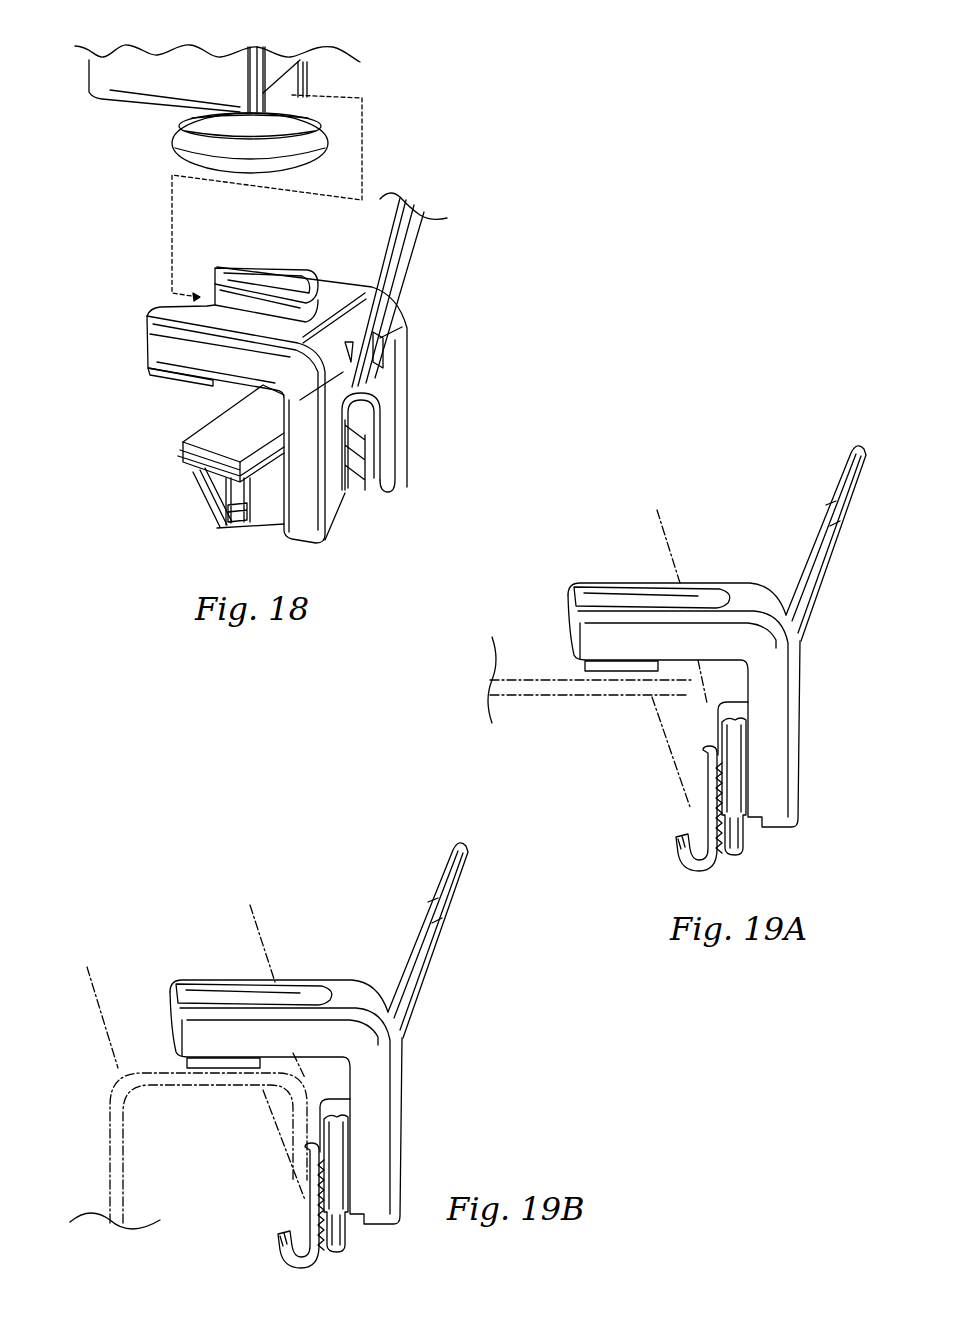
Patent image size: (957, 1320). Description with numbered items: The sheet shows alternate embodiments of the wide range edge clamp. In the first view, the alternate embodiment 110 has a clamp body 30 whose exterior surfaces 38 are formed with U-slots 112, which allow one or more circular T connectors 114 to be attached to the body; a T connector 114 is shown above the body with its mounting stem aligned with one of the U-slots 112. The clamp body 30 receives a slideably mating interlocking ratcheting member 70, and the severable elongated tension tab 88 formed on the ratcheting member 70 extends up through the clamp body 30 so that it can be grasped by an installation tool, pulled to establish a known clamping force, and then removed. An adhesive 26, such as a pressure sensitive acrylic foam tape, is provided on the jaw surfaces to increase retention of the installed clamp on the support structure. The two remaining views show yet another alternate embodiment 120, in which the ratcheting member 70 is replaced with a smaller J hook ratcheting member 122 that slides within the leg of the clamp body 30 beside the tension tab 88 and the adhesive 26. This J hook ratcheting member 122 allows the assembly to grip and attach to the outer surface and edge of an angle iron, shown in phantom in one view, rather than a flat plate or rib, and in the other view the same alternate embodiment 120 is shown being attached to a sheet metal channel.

In FIG. 18, the alternate embodiment 110 is at (118, 300).
In FIG. 18, the circular T connector 114 is at (177, 150).
In FIG. 18, the U-slot 112 is at (229, 283).
In FIG. 18, the exterior surface 38 is at (300, 277).
In FIG. 18, the tension tab 88 is at (408, 252).
In FIG. 19A, the tension tab 88 is at (835, 543).
In FIG. 19B, the tension tab 88 is at (427, 958).
In FIG. 18, the clamp body 30 is at (160, 342).
In FIG. 18, the adhesive 26 is at (170, 380).
In FIG. 19A, the adhesive 26 is at (606, 701).
In FIG. 19B, the adhesive 26 is at (237, 1062).
In FIG. 18, the ratcheting member 70 is at (193, 493).
In FIG. 19A, the alternate embodiment 120 is at (671, 666).
In FIG. 19B, the alternate embodiment 120 is at (193, 958).
In FIG. 19A, the J hook ratcheting member 122 is at (664, 808).
In FIG. 19B, the J hook ratcheting member 122 is at (305, 1202).